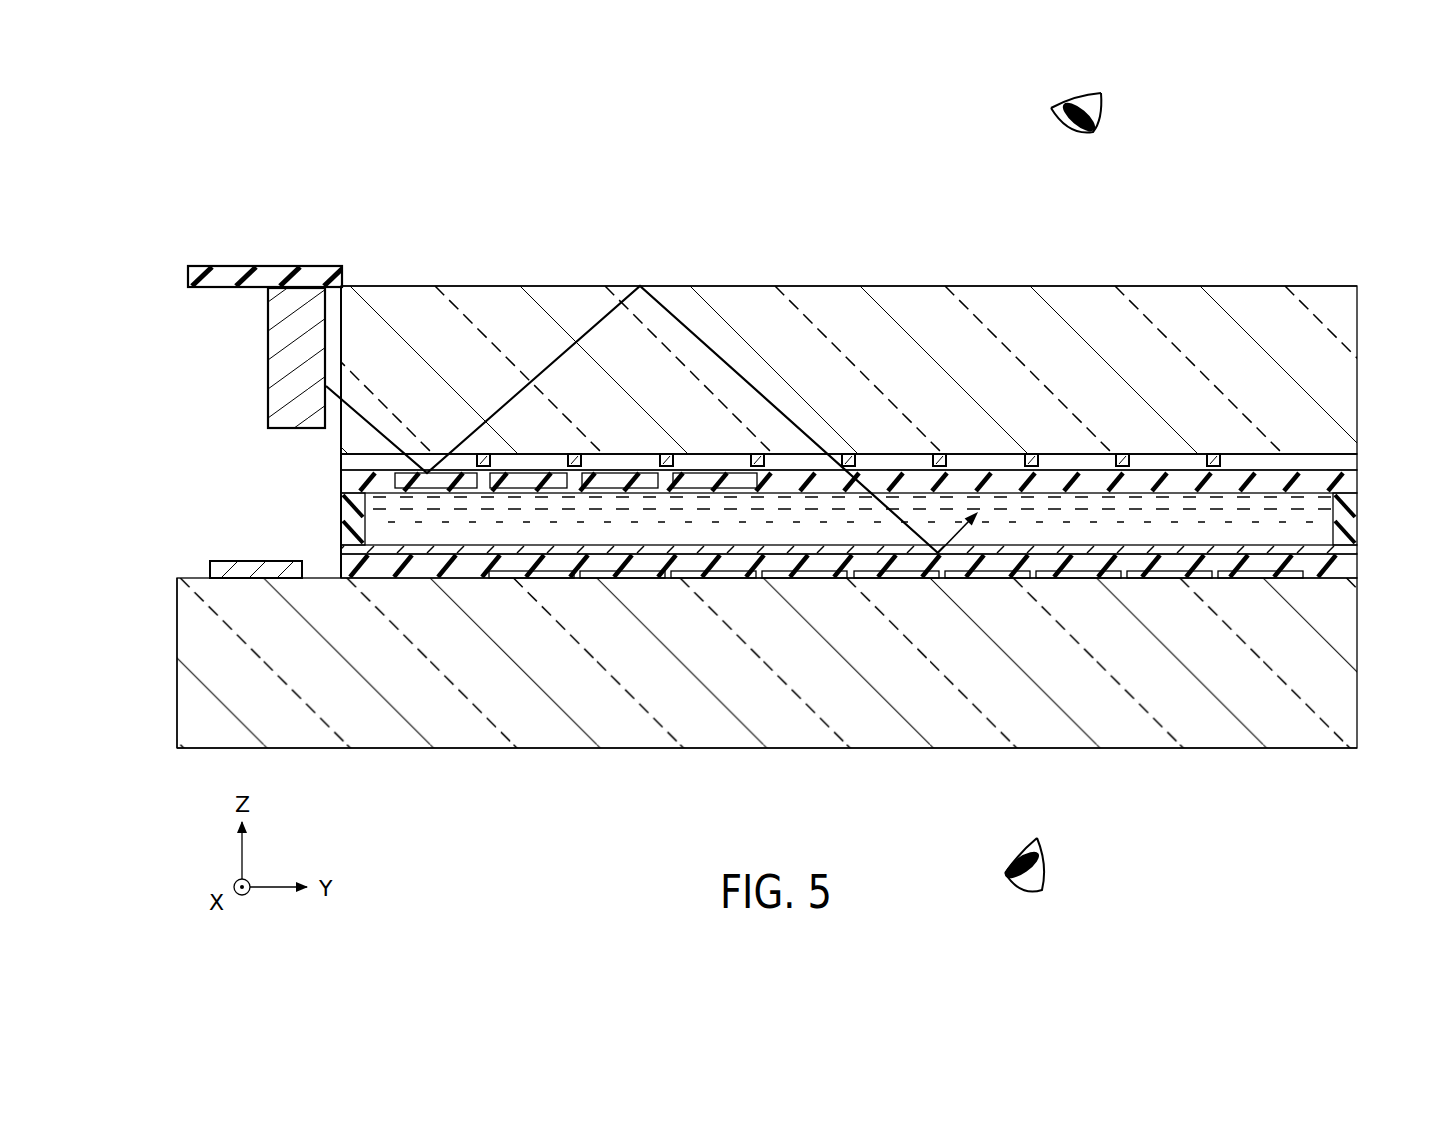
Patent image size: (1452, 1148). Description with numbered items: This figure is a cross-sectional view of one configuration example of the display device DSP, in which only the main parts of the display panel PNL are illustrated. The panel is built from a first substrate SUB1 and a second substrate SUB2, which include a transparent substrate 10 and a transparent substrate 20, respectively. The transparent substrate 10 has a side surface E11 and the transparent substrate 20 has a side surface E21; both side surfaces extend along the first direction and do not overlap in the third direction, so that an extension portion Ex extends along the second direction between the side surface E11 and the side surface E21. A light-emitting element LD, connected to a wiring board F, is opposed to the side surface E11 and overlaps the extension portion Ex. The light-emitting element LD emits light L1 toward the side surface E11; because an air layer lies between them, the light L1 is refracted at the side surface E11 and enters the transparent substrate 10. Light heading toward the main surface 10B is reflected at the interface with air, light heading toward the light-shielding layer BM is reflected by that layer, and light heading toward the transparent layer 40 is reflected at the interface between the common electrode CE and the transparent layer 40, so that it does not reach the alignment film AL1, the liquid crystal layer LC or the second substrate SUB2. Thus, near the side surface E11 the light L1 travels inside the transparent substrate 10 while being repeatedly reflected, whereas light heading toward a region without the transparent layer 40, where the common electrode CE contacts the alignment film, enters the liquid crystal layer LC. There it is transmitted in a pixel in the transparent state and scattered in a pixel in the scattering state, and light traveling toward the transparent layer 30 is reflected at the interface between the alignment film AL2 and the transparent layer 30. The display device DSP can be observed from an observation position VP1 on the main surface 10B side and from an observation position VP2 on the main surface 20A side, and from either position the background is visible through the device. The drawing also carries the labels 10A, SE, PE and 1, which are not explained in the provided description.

The display device DSP is at (208, 226).
The wiring board F is at (246, 267).
The light-emitting element LD is at (268, 376).
The side surface E11 is at (336, 317).
The display panel PNL is at (806, 284).
The main surface 10B is at (968, 285).
The first substrate SUB1 is at (1360, 291).
The transparent substrate 10 is at (1346, 364).
The lower surface of transparent substrate 10A is at (1064, 472).
The common electrode CE is at (1345, 466).
The light-shielding layer BM is at (483, 454).
The alignment film AL1 is at (1357, 481).
The transparent layer 40 is at (443, 468).
The liquid crystal layer LC is at (385, 528).
The sealant SE is at (1350, 524).
The second substrate SUB2 is at (1360, 723).
The alignment film AL2 is at (1335, 547).
The transparent layer 30 is at (1345, 576).
The pixel electrode PE is at (452, 580).
The transparent substrate 20 is at (1355, 668).
The main surface 20A is at (936, 752).
The side surface E21 is at (175, 647).
The extension portion Ex is at (190, 570).
The wiring board 1 is at (233, 535).
The light L1 is at (690, 329).
The observation position VP1 is at (1108, 113).
The observation position VP2 is at (1051, 870).